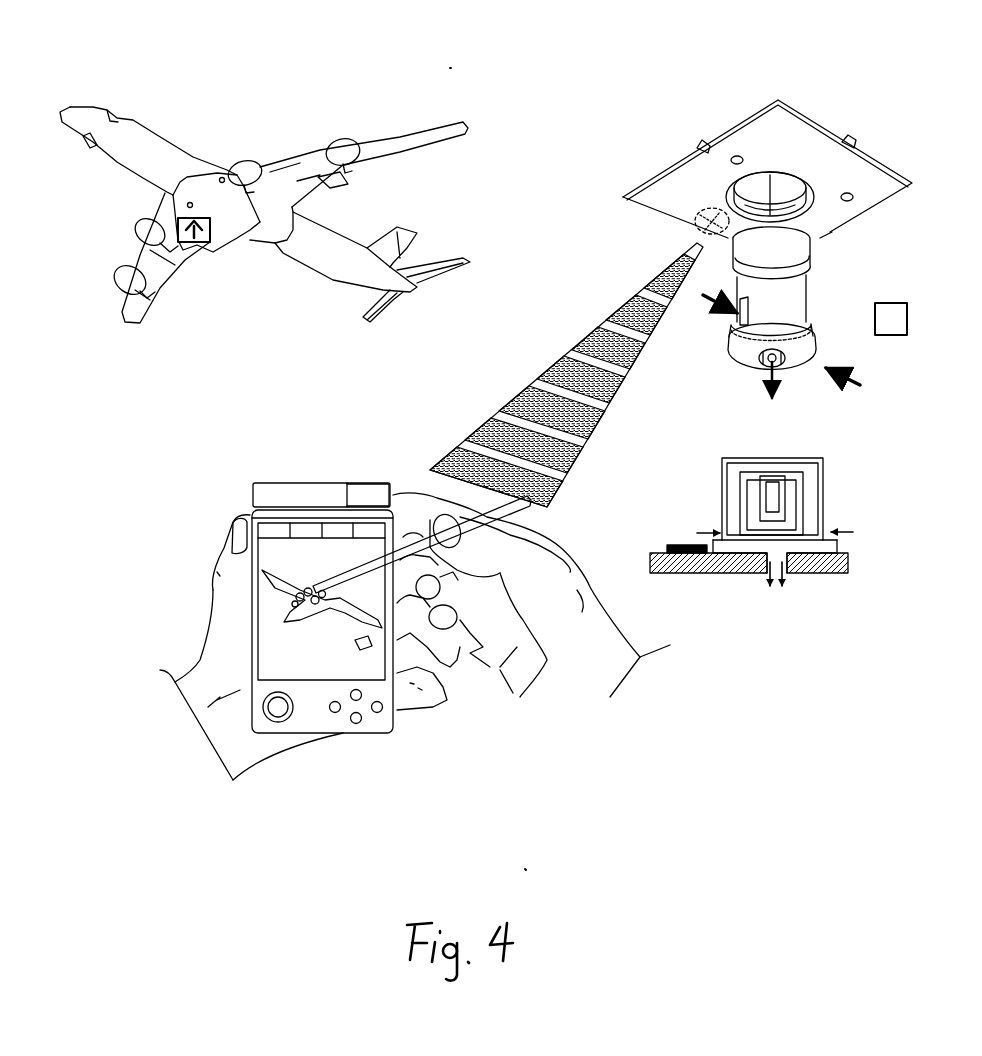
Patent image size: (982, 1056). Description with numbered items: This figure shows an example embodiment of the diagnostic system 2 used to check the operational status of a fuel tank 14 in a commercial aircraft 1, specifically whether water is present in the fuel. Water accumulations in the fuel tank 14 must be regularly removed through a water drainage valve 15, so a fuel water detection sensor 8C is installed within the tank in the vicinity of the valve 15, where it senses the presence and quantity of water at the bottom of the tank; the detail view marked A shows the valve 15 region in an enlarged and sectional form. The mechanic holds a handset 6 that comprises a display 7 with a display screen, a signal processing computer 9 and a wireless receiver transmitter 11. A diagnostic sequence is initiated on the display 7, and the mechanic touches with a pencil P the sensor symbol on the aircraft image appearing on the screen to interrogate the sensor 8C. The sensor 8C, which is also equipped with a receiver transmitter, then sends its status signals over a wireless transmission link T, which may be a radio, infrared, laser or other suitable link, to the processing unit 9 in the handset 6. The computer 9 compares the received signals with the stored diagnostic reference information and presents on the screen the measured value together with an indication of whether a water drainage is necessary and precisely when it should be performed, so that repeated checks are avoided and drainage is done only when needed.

The commercial aircraft 1 is at (213, 67).
The diagnostic system 2 is at (450, 398).
The handset 6 is at (317, 718).
The display 7 is at (270, 640).
The fuel water detection sensor 8C is at (698, 231).
The signal processing computer 9 is at (263, 491).
The wireless receiver transmitter 11 is at (363, 493).
The fuel tank 14 is at (236, 249).
The water drainage valve 15 is at (802, 304).
The wireless transmission link T is at (583, 344).
The pencil P is at (540, 512).
The detail A is at (891, 319).